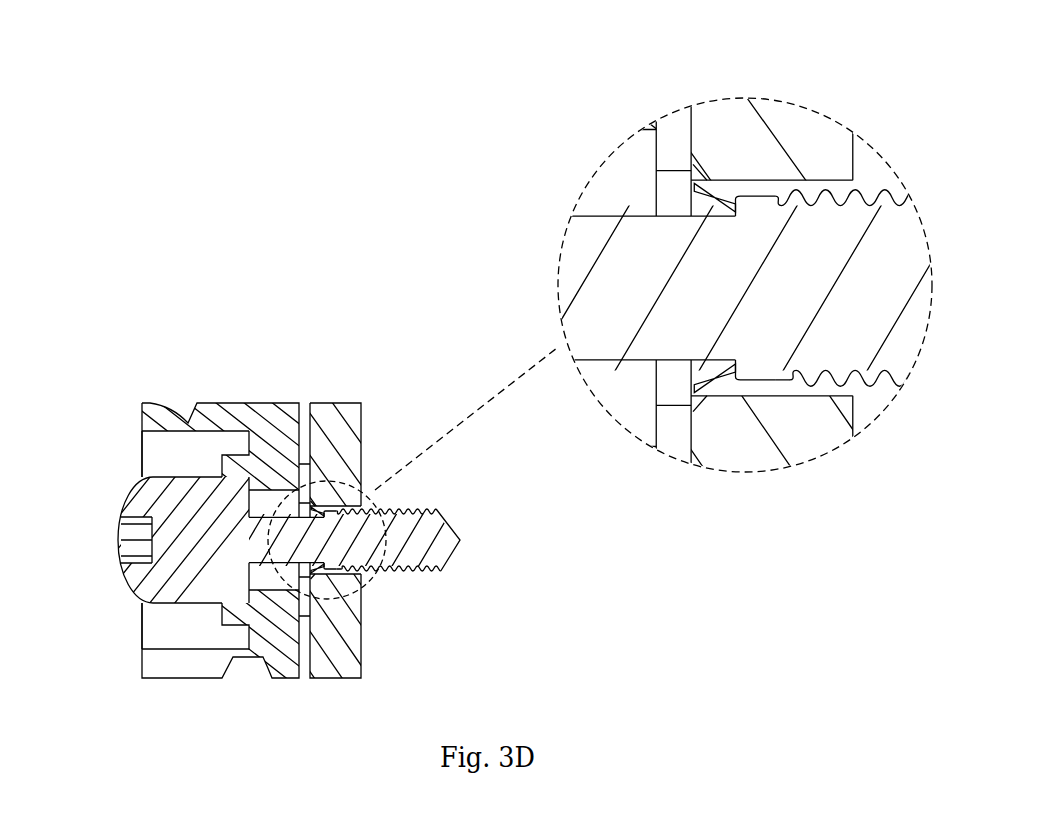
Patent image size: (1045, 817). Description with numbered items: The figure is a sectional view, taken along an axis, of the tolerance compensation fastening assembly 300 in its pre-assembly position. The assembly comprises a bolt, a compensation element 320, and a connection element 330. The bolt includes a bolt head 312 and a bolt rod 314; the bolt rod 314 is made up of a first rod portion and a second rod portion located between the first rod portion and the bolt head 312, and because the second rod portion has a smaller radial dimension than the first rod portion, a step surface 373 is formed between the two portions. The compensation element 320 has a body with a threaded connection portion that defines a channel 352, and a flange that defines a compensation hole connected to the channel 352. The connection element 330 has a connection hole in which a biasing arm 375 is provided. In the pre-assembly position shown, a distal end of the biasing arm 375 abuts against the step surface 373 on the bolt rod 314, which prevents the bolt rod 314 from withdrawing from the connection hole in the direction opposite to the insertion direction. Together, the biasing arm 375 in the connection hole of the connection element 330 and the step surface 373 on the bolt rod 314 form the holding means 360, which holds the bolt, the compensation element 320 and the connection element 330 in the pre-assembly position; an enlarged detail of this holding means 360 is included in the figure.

The tolerance compensation fastening assembly 300 is at (407, 354).
The bolt head 312 is at (137, 578).
The bolt rod 314 is at (405, 558).
The compensation element 320 is at (228, 412).
The connection element 330 is at (330, 420).
The channel 352 is at (157, 443).
The holding means 360 is at (563, 313).
The step surface 373 is at (738, 383).
The biasing arm 375 is at (715, 197).